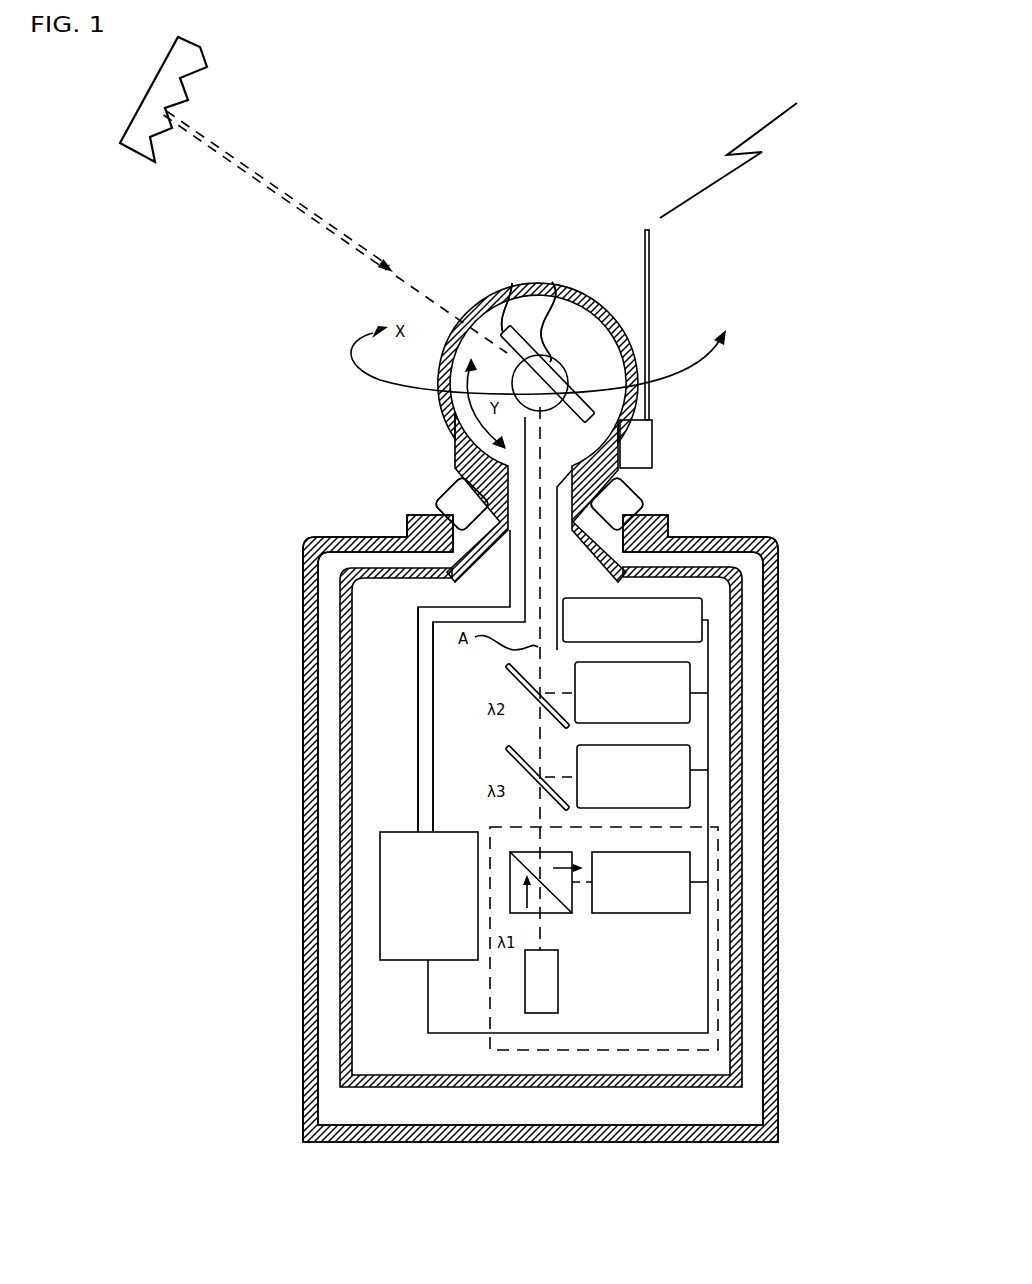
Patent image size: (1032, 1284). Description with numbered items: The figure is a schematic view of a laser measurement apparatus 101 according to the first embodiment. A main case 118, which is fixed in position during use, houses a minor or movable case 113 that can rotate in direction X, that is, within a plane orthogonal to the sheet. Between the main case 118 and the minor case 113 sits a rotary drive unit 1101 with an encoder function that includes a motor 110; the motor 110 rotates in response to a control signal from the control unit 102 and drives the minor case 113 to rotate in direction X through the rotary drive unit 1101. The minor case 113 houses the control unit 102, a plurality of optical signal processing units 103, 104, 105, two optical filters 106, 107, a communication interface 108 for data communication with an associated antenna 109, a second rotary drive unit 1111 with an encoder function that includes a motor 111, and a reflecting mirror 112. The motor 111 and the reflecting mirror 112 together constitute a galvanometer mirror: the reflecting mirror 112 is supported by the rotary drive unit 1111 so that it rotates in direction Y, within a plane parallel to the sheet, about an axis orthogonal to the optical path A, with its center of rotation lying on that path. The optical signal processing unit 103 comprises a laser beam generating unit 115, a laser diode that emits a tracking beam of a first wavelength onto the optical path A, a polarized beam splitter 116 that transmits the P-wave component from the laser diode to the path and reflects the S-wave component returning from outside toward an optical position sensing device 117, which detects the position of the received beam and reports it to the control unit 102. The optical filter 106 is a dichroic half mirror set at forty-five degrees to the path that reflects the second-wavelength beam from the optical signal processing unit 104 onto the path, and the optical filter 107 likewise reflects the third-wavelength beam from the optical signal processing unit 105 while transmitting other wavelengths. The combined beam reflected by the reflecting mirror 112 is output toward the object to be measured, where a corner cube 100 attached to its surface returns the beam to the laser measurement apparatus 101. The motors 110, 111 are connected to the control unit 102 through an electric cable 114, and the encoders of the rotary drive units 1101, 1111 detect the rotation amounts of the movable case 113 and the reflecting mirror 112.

The corner cube 100 is at (198, 66).
The laser measurement apparatus 101 is at (287, 437).
The control unit 102 is at (390, 860).
The optical signal processing unit 103 is at (683, 969).
The optical signal processing unit 104 is at (688, 670).
The optical signal processing unit 105 is at (683, 762).
The optical filter 106 is at (512, 680).
The optical filter 107 is at (512, 758).
The communication interface 108 is at (703, 598).
The antenna 109 is at (650, 243).
The motor 110 is at (449, 499).
The rotary drive unit 1101 is at (457, 493).
The motor 111 is at (561, 306).
The rotary drive unit 1111 is at (561, 293).
The reflecting mirror 112 is at (530, 338).
The minor case 113 is at (447, 423).
The electric cable 114 is at (418, 823).
The laser beam generating unit 115 is at (545, 1013).
The polarized beam splitter 116 is at (515, 907).
The optical position sensing device 117 is at (683, 863).
The main case 118 is at (302, 917).